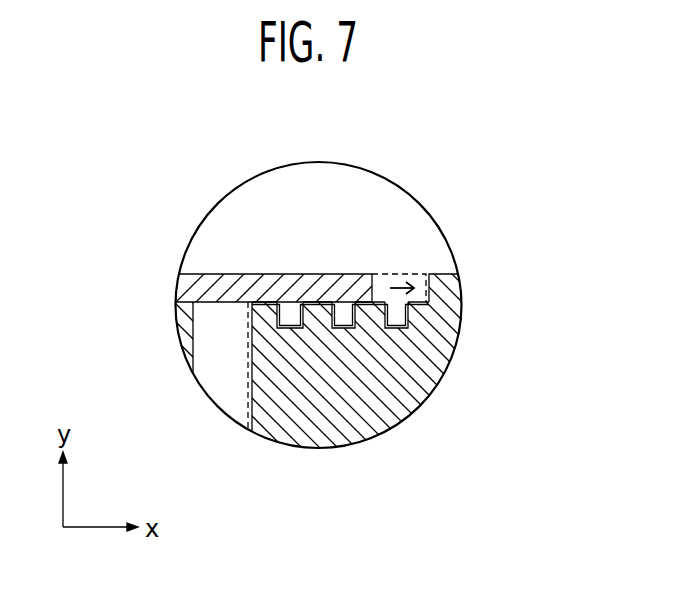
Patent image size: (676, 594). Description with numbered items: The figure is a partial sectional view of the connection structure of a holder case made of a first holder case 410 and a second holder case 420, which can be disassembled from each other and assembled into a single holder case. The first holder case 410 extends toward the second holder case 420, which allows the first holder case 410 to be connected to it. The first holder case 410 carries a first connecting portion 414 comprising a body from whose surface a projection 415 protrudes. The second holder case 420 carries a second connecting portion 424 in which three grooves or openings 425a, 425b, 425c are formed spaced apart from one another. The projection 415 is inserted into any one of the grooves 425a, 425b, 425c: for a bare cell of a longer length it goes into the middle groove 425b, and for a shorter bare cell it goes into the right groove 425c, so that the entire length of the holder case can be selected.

The first holder case 410 is at (178, 302).
The first connecting portion 414 is at (249, 288).
The projection 415 is at (342, 303).
The second holder case 420 is at (431, 327).
The second connecting portion 424 is at (431, 284).
The groove 425a is at (297, 330).
The middle groove 425b is at (348, 330).
The right groove 425c is at (412, 330).